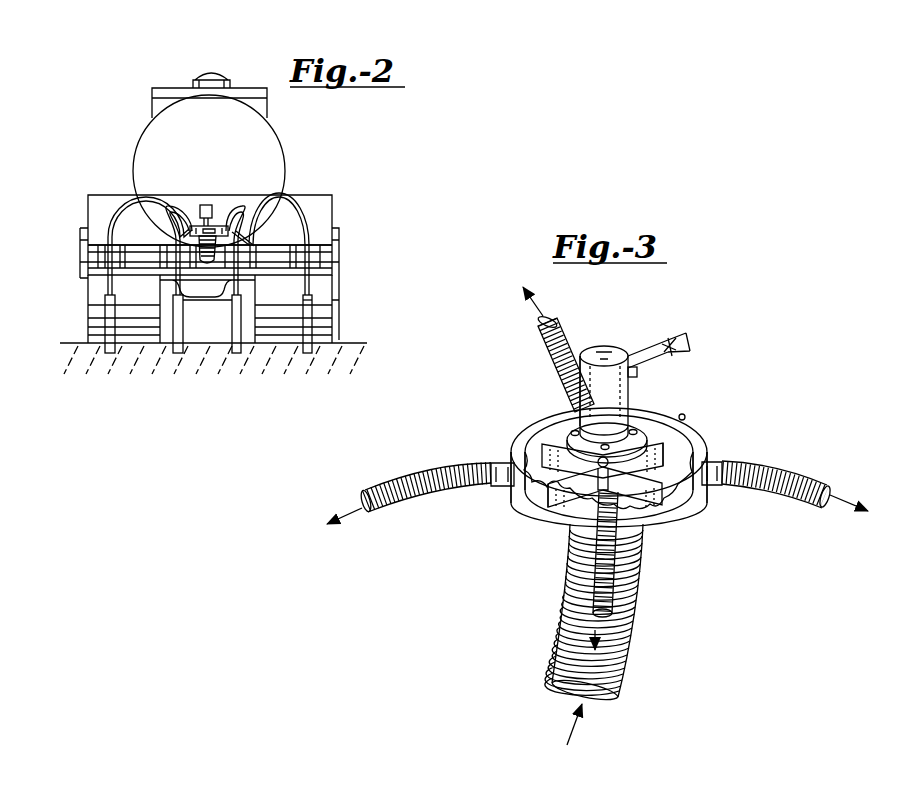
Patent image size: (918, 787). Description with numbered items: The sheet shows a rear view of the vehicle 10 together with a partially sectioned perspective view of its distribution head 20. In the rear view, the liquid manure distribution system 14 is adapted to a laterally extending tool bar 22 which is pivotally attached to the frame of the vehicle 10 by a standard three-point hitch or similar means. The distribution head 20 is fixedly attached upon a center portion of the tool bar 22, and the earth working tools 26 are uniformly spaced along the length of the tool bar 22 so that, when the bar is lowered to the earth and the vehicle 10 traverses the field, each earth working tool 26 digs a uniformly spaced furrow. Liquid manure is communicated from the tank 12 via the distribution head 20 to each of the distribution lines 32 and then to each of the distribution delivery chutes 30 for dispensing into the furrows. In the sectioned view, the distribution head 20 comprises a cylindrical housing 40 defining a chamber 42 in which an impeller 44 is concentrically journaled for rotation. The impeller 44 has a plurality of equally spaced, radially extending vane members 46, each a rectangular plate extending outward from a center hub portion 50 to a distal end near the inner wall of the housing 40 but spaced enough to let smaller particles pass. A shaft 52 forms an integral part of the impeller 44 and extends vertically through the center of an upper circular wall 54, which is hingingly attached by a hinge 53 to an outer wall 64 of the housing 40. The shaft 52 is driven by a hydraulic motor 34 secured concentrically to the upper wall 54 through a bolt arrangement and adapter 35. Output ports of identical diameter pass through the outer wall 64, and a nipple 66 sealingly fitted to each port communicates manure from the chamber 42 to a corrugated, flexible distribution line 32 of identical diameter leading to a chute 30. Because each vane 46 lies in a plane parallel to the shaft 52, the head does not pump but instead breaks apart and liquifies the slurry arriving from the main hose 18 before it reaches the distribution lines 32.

In FIG. 2, the vehicle 10 is at (120, 88).
In FIG. 2, the tank 12 is at (218, 131).
In FIG. 2, the liquid manure distribution system 14 is at (83, 192).
In FIG. 3, the main hose 18 is at (562, 642).
In FIG. 2, the distribution head 20 is at (208, 196).
In FIG. 3, the distribution head 20 is at (706, 340).
In FIG. 2, the tool bar 22 is at (260, 258).
In FIG. 2, the earth working tools 26 is at (226, 315).
In FIG. 2, the distribution delivery chutes 30 is at (313, 297).
In FIG. 2, the distribution lines 32 is at (118, 207).
In FIG. 3, the distribution lines 32 is at (542, 342).
In FIG. 2, the motor 34 is at (206, 204).
In FIG. 3, the motor 34 is at (598, 346).
In FIG. 3, the adapter 35 is at (645, 437).
In FIG. 3, the cylindrical housing 40 is at (650, 527).
In FIG. 3, the chamber 42 is at (520, 508).
In FIG. 3, the impeller 44 is at (672, 505).
In FIG. 3, the vane members 46 is at (537, 490).
In FIG. 3, the center hub portion 50 is at (566, 503).
In FIG. 3, the shaft 52 is at (562, 450).
In FIG. 3, the hinge 53 is at (685, 414).
In FIG. 3, the upper circular wall 54 is at (520, 430).
In FIG. 3, the outer wall 64 is at (700, 453).
In FIG. 3, the nipple 66 is at (642, 347).